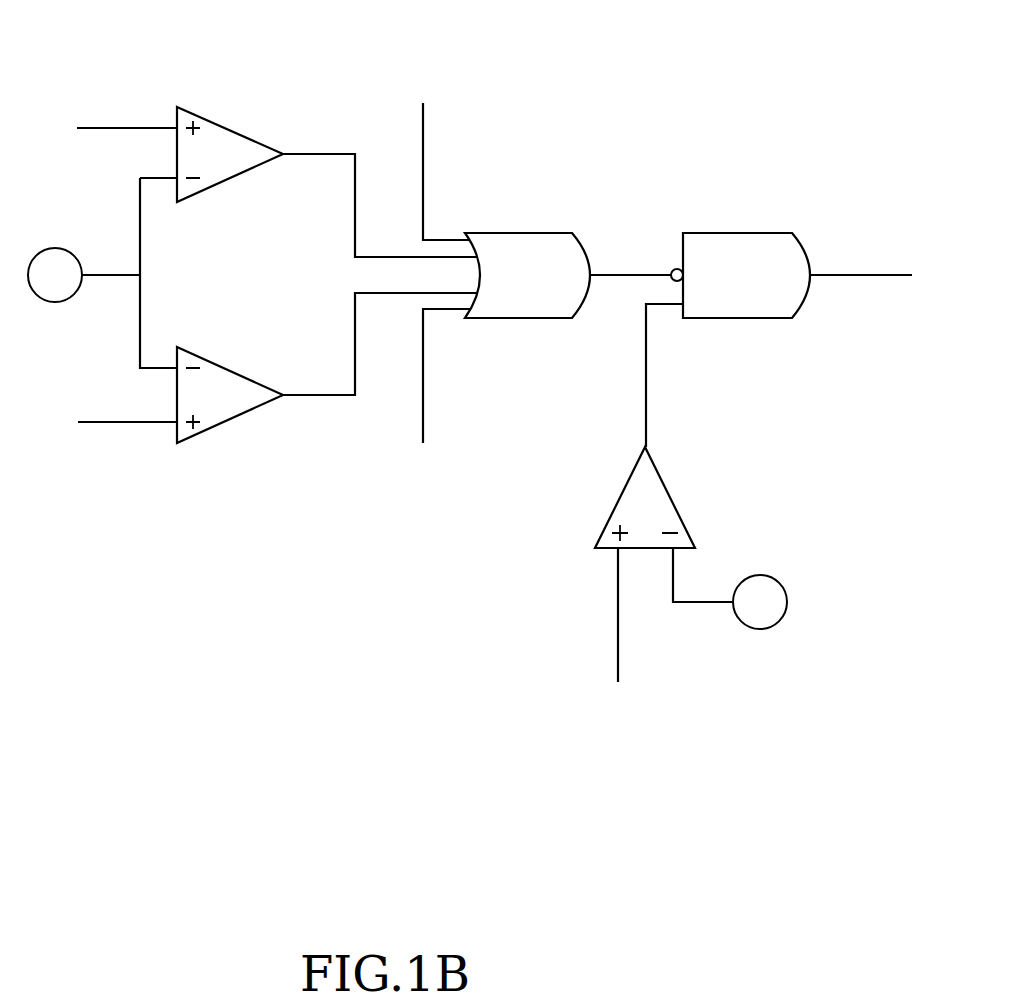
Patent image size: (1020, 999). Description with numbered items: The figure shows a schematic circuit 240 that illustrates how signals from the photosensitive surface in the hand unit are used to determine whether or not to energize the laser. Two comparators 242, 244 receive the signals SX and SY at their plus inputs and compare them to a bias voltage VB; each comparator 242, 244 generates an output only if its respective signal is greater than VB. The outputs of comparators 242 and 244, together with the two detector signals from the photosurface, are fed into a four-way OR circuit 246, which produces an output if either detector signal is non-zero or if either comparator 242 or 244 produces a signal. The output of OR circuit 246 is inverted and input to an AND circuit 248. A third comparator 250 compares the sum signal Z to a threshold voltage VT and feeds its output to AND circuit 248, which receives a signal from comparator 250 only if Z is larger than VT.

The schematic circuit 240 is at (656, 105).
The comparator 242 is at (222, 124).
The comparator 244 is at (222, 424).
The OR circuit 246 is at (518, 233).
The AND circuit 248 is at (735, 233).
The comparator 250 is at (672, 495).